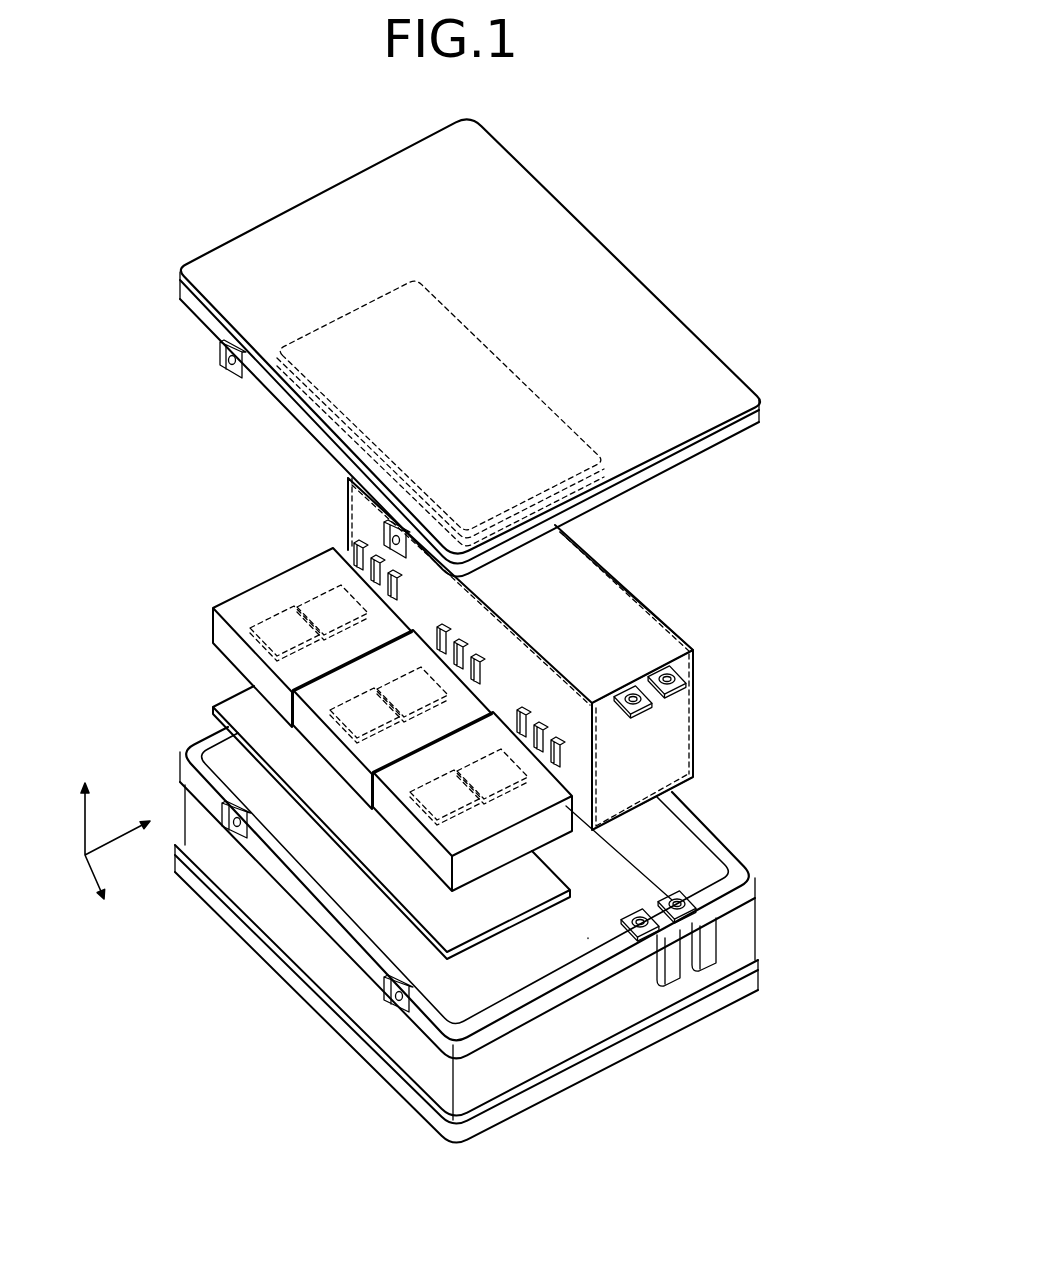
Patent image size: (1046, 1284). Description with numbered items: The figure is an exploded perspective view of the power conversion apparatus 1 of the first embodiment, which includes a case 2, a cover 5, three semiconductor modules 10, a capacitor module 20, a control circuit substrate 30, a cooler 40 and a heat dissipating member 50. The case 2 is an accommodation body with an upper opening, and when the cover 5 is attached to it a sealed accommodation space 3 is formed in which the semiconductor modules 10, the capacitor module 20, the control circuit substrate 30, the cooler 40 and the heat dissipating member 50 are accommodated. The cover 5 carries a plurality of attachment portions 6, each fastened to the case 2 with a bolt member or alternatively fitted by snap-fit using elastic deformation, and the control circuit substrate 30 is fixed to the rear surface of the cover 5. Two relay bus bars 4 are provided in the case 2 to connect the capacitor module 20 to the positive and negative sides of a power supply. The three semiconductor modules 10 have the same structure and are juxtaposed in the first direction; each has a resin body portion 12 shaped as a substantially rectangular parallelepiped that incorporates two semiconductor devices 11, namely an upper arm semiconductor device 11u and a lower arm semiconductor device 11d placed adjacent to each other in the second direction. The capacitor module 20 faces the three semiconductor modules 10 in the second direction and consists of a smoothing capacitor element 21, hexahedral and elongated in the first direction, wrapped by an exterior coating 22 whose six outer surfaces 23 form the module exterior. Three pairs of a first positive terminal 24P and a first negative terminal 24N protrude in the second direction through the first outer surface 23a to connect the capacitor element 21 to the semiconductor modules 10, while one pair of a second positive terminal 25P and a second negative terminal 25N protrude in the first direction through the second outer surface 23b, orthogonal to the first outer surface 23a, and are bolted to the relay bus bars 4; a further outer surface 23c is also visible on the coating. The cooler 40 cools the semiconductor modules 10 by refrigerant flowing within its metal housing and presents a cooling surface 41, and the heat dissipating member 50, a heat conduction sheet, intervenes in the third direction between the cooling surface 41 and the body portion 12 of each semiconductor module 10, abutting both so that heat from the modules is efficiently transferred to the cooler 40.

The power conversion apparatus 1 is at (608, 184).
The case 2 is at (720, 835).
The accommodation space 3 is at (584, 935).
The relay bus bar 4 is at (642, 905).
The cover 5 is at (690, 321).
The attachment portion 6 is at (226, 384).
The semiconductor module 10 is at (303, 565).
The semiconductor device 11 is at (312, 683).
The lower arm semiconductor device 11d is at (300, 590).
The upper arm semiconductor device 11u is at (270, 615).
The body portion 12 is at (228, 633).
The capacitor module 20 is at (610, 550).
The capacitor element 21 is at (610, 603).
The exterior coating 22 is at (661, 610).
The outer surface 23 is at (600, 652).
The first outer surface 23a is at (660, 788).
The second outer surface 23b is at (652, 745).
The housing upper edge 23c is at (661, 646).
The first negative terminal 24N is at (362, 543).
The first positive terminal 24P is at (375, 560).
The second negative terminal 25N is at (672, 686).
The second positive terminal 25P is at (650, 713).
The control circuit substrate 30 is at (328, 308).
The cooler 40 is at (250, 778).
The cooling surface 41 is at (392, 935).
The heat dissipating member 50 is at (232, 712).